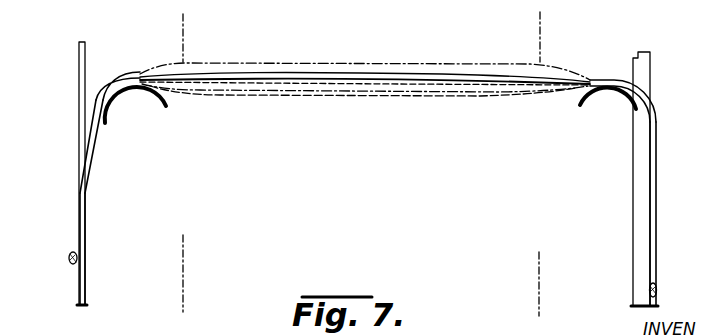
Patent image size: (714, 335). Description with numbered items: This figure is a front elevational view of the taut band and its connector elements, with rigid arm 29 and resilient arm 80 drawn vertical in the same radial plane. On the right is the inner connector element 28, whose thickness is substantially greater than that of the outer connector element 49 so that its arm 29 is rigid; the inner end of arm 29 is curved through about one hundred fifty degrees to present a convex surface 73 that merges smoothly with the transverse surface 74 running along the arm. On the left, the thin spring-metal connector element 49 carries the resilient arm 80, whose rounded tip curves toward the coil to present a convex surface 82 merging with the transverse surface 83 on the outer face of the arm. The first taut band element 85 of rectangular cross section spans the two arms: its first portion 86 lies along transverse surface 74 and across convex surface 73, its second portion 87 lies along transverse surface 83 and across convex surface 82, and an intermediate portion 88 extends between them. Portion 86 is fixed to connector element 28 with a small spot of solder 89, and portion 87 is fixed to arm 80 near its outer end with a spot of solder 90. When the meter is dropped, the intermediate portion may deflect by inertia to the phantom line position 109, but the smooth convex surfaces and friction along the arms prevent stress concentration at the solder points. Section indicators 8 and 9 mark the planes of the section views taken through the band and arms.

The section line 8- 8 is at (188, 295).
The section line 9- 9 is at (536, 295).
The connector element 28 is at (632, 222).
The arm 29 is at (638, 172).
The second connector element 49 is at (86, 232).
The convex surface 73 is at (570, 95).
The transverse surface 74 is at (652, 212).
The arm 80 is at (86, 178).
The convex surface 82 is at (172, 100).
The transverse surface 83 is at (80, 225).
The first taut band element 85 is at (347, 76).
The first portion 86 is at (615, 79).
The second portion 87 is at (101, 92).
The intermediate portion 88 is at (393, 82).
The spot of solder 89 is at (657, 292).
The spot of solder 90 is at (70, 257).
The phantom line position 109 is at (332, 97).